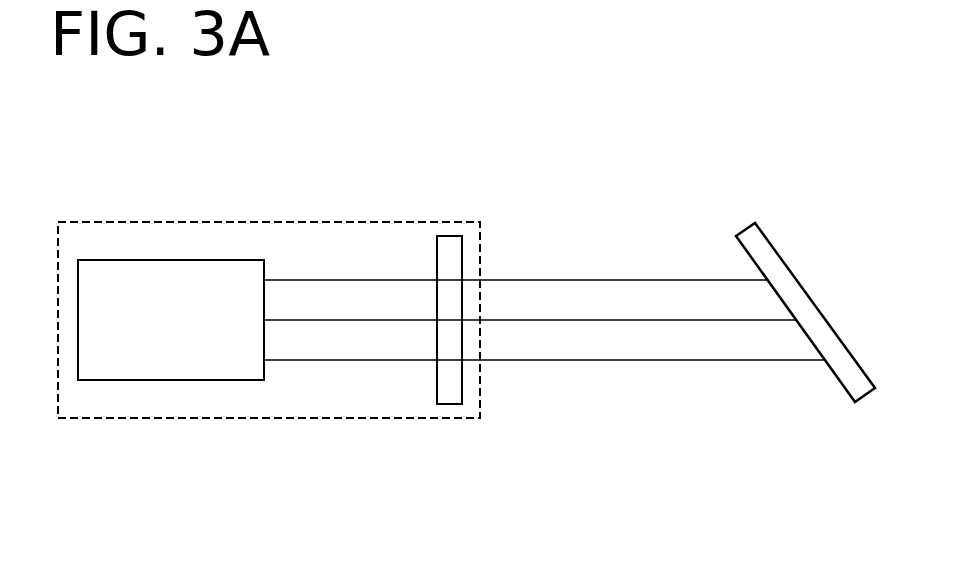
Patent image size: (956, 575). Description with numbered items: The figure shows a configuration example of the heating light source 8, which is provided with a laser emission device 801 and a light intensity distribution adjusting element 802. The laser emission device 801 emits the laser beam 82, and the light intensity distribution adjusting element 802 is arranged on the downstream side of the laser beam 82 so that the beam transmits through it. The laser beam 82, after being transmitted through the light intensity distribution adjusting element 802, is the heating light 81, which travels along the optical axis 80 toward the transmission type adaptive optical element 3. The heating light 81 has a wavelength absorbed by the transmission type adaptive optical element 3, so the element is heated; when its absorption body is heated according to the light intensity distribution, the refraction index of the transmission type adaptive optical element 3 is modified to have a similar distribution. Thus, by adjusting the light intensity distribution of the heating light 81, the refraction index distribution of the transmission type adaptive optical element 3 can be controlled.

The heating light source 8 is at (168, 222).
The laser emission device 801 is at (175, 380).
The light intensity distribution adjusting element 802 is at (450, 404).
The laser beam 82 is at (362, 278).
The heating light 81 is at (537, 278).
The optical axis 80 is at (665, 320).
The transmission type adaptive optical element 3 is at (842, 377).